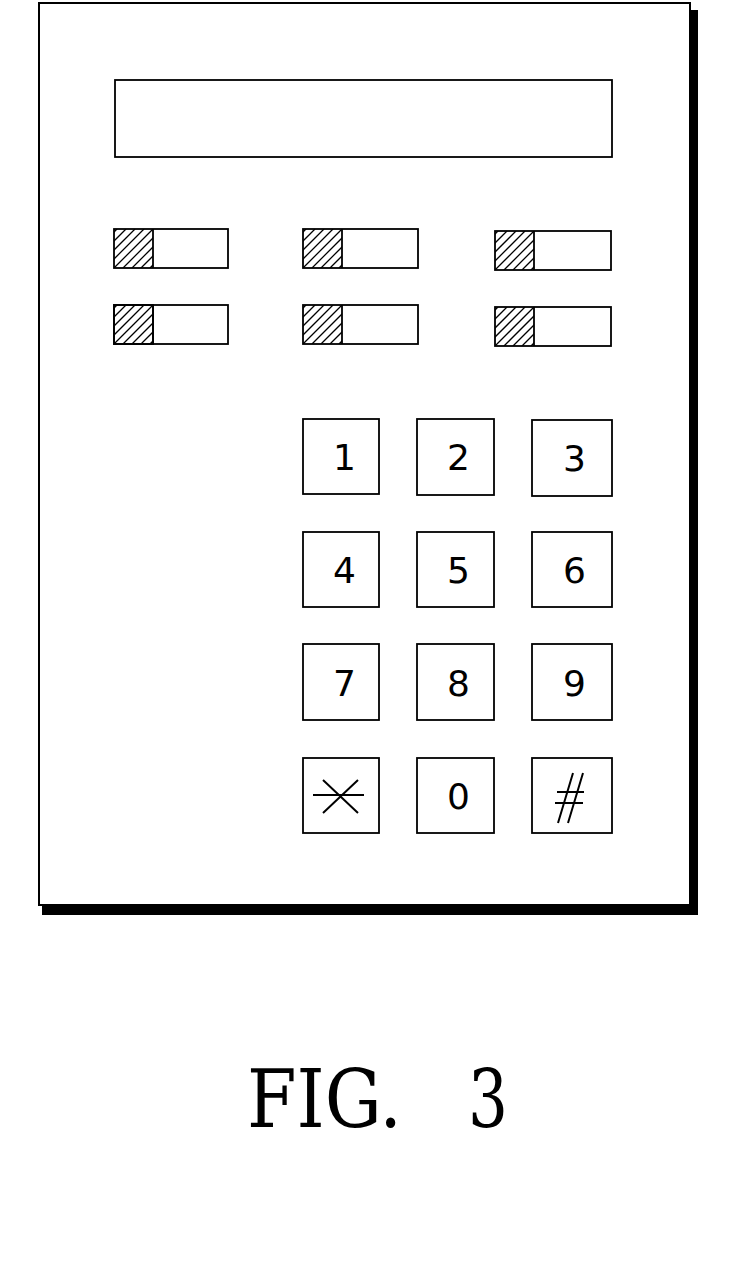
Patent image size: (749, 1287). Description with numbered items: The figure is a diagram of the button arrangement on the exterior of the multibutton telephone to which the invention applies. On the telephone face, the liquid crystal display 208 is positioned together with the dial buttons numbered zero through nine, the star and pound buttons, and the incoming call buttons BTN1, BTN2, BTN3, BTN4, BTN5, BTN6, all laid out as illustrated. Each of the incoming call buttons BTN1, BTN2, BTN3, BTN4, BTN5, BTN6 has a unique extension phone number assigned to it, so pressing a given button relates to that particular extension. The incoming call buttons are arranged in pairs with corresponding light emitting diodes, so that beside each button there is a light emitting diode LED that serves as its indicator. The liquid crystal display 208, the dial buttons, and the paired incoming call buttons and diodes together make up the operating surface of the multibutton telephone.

The liquid crystal display 208 is at (415, 60).
The incoming call button BTN1 is at (208, 218).
The incoming call button BTN2 is at (398, 218).
The incoming call button BTN3 is at (590, 219).
The incoming call button BTN4 is at (177, 344).
The incoming call button BTN5 is at (368, 344).
The incoming call button BTN6 is at (587, 362).
The light emitting diode LED is at (133, 344).